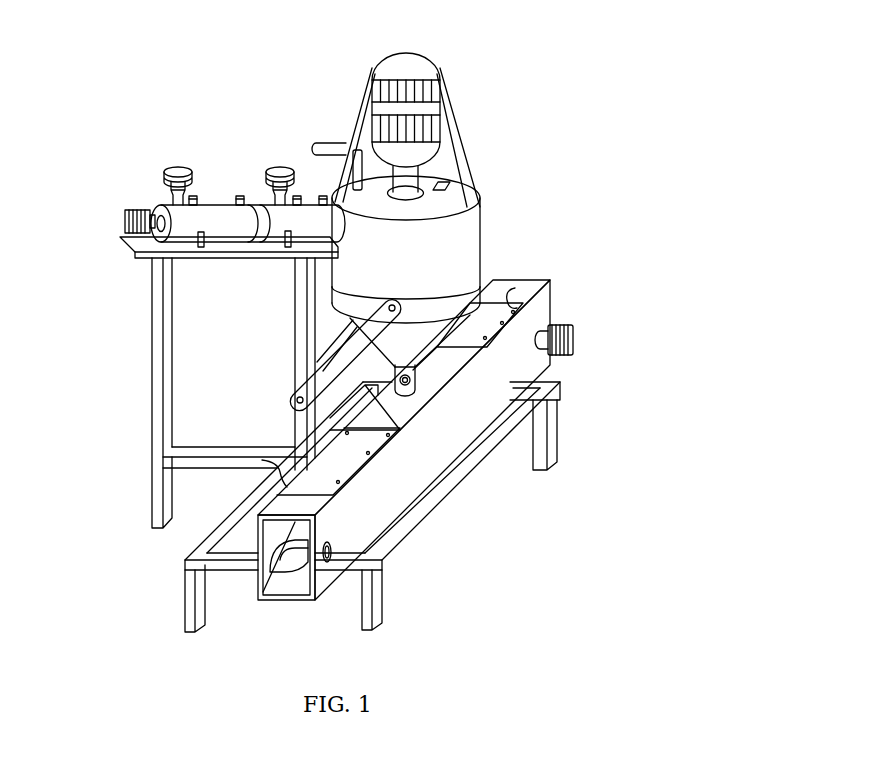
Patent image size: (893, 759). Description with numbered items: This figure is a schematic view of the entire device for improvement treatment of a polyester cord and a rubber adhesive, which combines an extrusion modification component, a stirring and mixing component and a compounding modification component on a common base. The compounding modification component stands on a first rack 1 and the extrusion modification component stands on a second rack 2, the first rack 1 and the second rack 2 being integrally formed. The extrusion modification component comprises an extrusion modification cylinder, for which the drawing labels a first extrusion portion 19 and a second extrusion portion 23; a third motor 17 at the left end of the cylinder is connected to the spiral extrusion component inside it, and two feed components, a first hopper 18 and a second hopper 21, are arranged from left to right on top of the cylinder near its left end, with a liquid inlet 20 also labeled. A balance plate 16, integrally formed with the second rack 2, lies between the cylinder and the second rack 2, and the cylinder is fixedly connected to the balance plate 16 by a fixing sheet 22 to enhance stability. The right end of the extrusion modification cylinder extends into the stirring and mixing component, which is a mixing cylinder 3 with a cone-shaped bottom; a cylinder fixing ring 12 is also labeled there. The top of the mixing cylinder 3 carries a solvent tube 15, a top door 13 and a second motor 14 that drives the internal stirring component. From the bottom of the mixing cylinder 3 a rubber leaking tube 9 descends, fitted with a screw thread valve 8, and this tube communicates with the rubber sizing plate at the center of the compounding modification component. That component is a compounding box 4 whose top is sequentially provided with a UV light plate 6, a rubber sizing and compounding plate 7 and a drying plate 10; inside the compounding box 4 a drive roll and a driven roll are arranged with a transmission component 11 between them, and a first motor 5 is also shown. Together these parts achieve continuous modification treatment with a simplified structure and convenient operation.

The first rack 1 is at (558, 387).
The second rack 2 is at (152, 393).
The mixing cylinder 3 is at (487, 220).
The compounding box 4 is at (530, 278).
The first motor 5 is at (573, 337).
The UV light plate 6 is at (477, 335).
The rubber sizing and compounding plate 7 is at (430, 387).
The screw thread valve 8 is at (413, 395).
The rubber leaking tube 9 is at (397, 395).
The drying plate 10 is at (355, 460).
The transmission component 11 is at (290, 572).
The cylinder fixing ring 12 is at (483, 288).
The top door 13 is at (443, 183).
The second motor 14 is at (428, 83).
The solvent tube 15 is at (342, 140).
The balance plate 16 is at (120, 240).
The third motor 17 is at (128, 210).
The first hopper 18 is at (167, 175).
The first extrusion portion 19 is at (220, 200).
The liquid inlet 20 is at (240, 197).
The second hopper 21 is at (280, 170).
The fixing sheet 22 is at (288, 250).
The second extrusion portion 23 is at (275, 238).